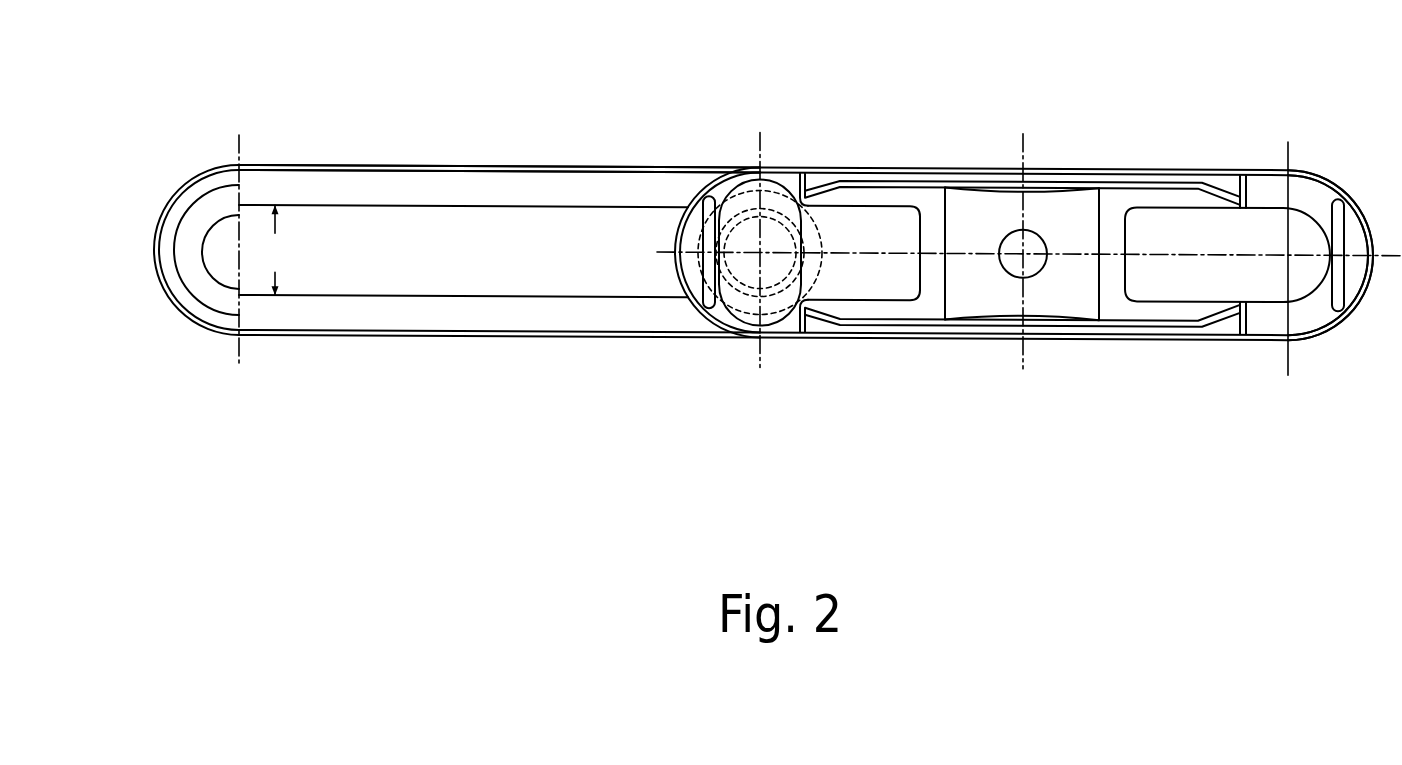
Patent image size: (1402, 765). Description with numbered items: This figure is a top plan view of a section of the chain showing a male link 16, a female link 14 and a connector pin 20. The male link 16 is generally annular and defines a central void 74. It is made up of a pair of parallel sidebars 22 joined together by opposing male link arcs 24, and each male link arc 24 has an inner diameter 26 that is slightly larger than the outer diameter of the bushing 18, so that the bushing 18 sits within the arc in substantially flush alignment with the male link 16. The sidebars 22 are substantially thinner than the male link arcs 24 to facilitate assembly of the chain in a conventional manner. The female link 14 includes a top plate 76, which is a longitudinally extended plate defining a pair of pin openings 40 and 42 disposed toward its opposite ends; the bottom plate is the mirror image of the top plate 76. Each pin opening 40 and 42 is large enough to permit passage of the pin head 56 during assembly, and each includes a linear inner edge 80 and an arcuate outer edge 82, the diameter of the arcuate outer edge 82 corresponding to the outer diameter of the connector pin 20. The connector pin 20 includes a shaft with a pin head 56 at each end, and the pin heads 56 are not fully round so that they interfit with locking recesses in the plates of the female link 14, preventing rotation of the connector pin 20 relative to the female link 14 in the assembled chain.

The female link 14 is at (977, 136).
The male link 16 is at (372, 142).
The bushing 18 is at (197, 283).
The connector pin 20 is at (750, 240).
The sidebar 22 is at (550, 306).
The male link arc 24 is at (168, 222).
The inner diameter 26 is at (271, 250).
The pin opening 40 is at (840, 277).
The pin opening 42 is at (1243, 275).
The pin head 56 is at (748, 310).
The central void 74 is at (303, 295).
The top plate 76 is at (1052, 349).
The linear inner edge 80 is at (1125, 229).
The arcuate outer edge 82 is at (1332, 240).